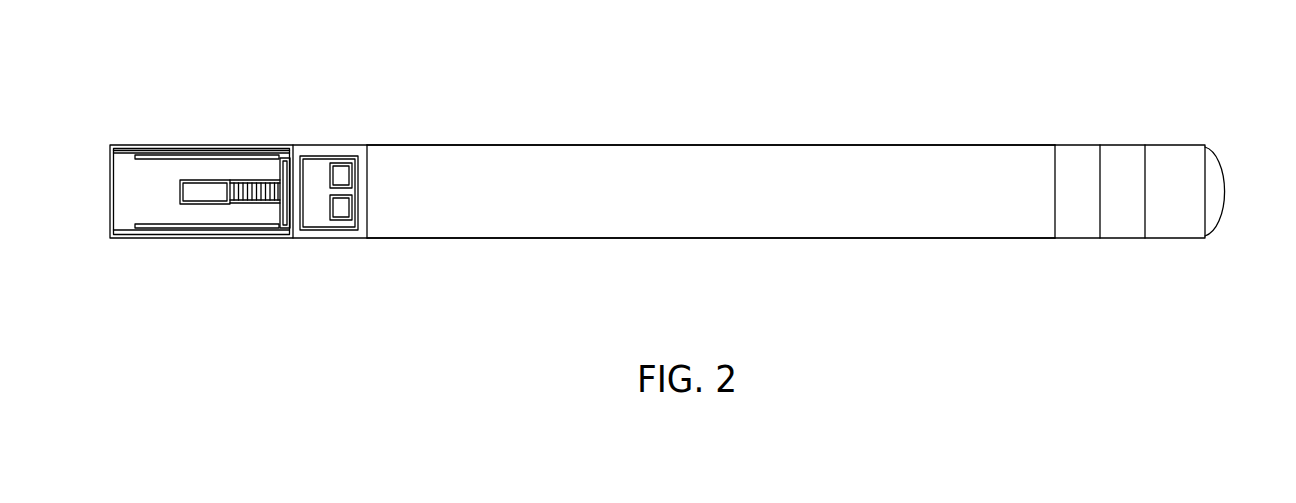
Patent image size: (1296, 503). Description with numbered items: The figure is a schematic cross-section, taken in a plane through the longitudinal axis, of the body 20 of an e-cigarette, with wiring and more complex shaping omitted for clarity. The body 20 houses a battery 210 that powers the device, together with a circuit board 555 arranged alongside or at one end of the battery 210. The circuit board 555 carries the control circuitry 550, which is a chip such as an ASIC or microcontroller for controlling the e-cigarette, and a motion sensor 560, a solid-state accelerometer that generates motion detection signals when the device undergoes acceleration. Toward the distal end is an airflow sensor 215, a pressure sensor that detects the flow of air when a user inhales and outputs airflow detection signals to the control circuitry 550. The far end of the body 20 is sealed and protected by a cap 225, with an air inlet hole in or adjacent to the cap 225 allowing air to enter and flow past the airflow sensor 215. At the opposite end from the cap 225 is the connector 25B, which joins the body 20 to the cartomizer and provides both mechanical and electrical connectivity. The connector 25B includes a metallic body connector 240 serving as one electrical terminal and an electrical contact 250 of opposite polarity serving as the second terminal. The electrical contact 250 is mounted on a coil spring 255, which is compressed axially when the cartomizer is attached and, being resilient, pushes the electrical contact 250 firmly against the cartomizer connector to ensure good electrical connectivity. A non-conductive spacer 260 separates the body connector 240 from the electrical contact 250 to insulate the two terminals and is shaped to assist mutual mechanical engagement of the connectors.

The body 20 is at (785, 239).
The battery 210 is at (737, 193).
The airflow sensor 215 is at (1123, 195).
The cap 225 is at (1215, 193).
The body connector 240 is at (130, 238).
The connector 25B is at (200, 145).
The spacer 260 is at (268, 148).
The electrical contact 250 is at (203, 193).
The coil spring 255 is at (257, 195).
The control circuitry 550 is at (345, 160).
The circuit board 555 is at (310, 229).
The motion sensor 560 is at (342, 228).